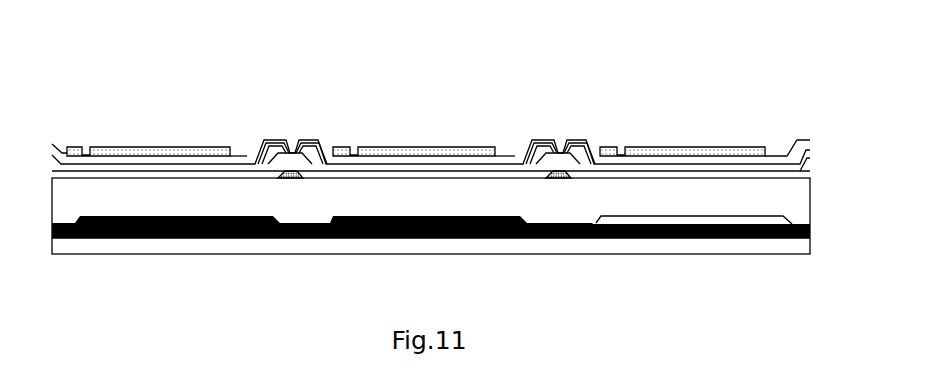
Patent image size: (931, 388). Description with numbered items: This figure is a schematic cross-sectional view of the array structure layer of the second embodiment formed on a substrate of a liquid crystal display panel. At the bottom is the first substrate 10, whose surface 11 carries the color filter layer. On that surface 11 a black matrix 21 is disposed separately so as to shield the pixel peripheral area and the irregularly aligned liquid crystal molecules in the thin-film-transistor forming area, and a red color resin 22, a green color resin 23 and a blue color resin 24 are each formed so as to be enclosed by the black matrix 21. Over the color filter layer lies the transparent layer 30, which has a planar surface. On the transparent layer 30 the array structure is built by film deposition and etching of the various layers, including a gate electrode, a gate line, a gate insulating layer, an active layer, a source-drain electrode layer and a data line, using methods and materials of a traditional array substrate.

The first substrate 10 is at (242, 247).
The surface 11 is at (734, 232).
The black matrix 21 is at (570, 222).
The red color resin 22 is at (132, 228).
The green color resin 23 is at (457, 226).
The blue color resin 24 is at (708, 230).
The transparent layer 30 is at (342, 196).